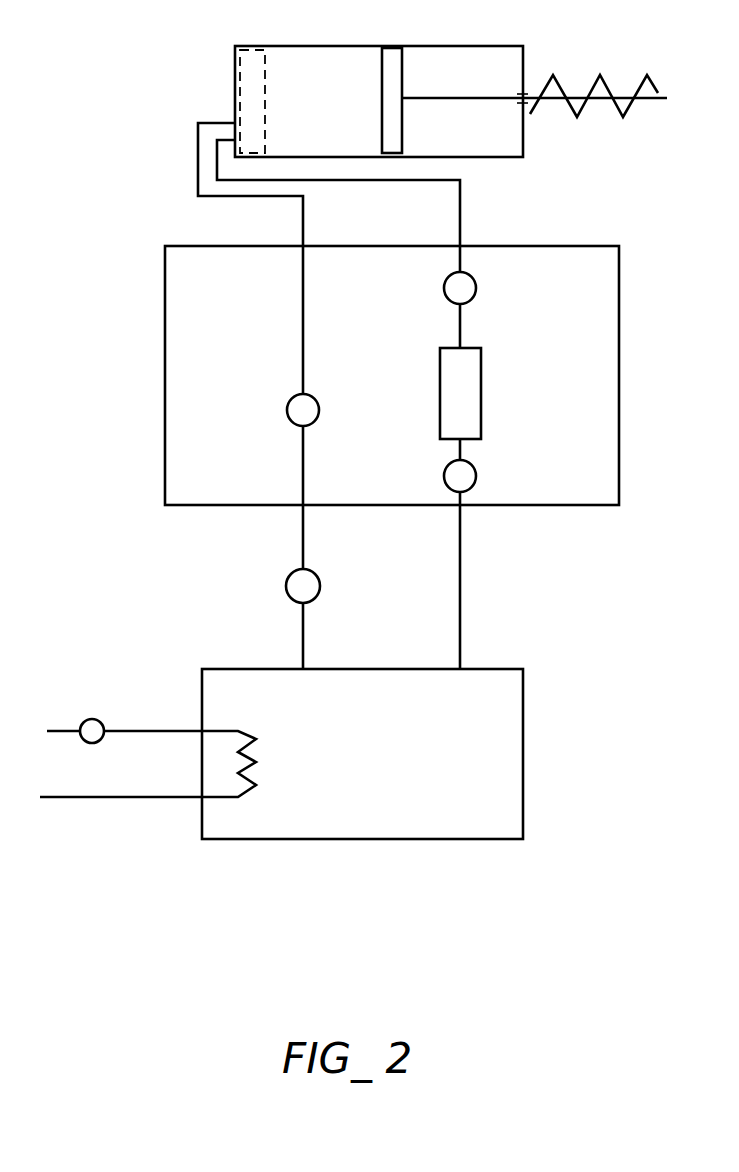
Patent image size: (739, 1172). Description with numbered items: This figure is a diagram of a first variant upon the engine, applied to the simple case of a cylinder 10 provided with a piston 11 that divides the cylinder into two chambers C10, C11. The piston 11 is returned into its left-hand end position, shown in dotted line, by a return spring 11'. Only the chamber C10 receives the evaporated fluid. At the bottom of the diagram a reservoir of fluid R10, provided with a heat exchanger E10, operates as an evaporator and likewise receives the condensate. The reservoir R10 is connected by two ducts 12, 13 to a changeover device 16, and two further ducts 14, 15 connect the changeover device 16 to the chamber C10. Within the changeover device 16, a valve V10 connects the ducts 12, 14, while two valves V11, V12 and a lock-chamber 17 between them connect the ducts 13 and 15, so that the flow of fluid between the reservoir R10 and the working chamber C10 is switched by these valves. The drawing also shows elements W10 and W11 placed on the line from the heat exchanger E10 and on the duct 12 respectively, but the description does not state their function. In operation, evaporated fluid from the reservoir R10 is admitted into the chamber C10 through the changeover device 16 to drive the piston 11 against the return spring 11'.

The cylinder 10 is at (297, 55).
The piston 11 is at (524, 81).
The return spring 11' is at (594, 70).
The chamber C10 is at (328, 138).
The chamber C11 is at (465, 138).
The duct 12 is at (300, 535).
The duct 13 is at (461, 556).
The duct 14 is at (266, 314).
The duct 15 is at (356, 206).
The changeover device 16 is at (605, 332).
The lock-chamber 17 is at (467, 392).
The valve V10 is at (290, 421).
The valve V11 is at (470, 489).
The valve V12 is at (470, 302).
The heat exchanger valve W10 is at (83, 720).
The heat exchanger valve W11 is at (312, 600).
The heat exchanger E10 is at (248, 755).
The reservoir of fluid R10 is at (358, 825).